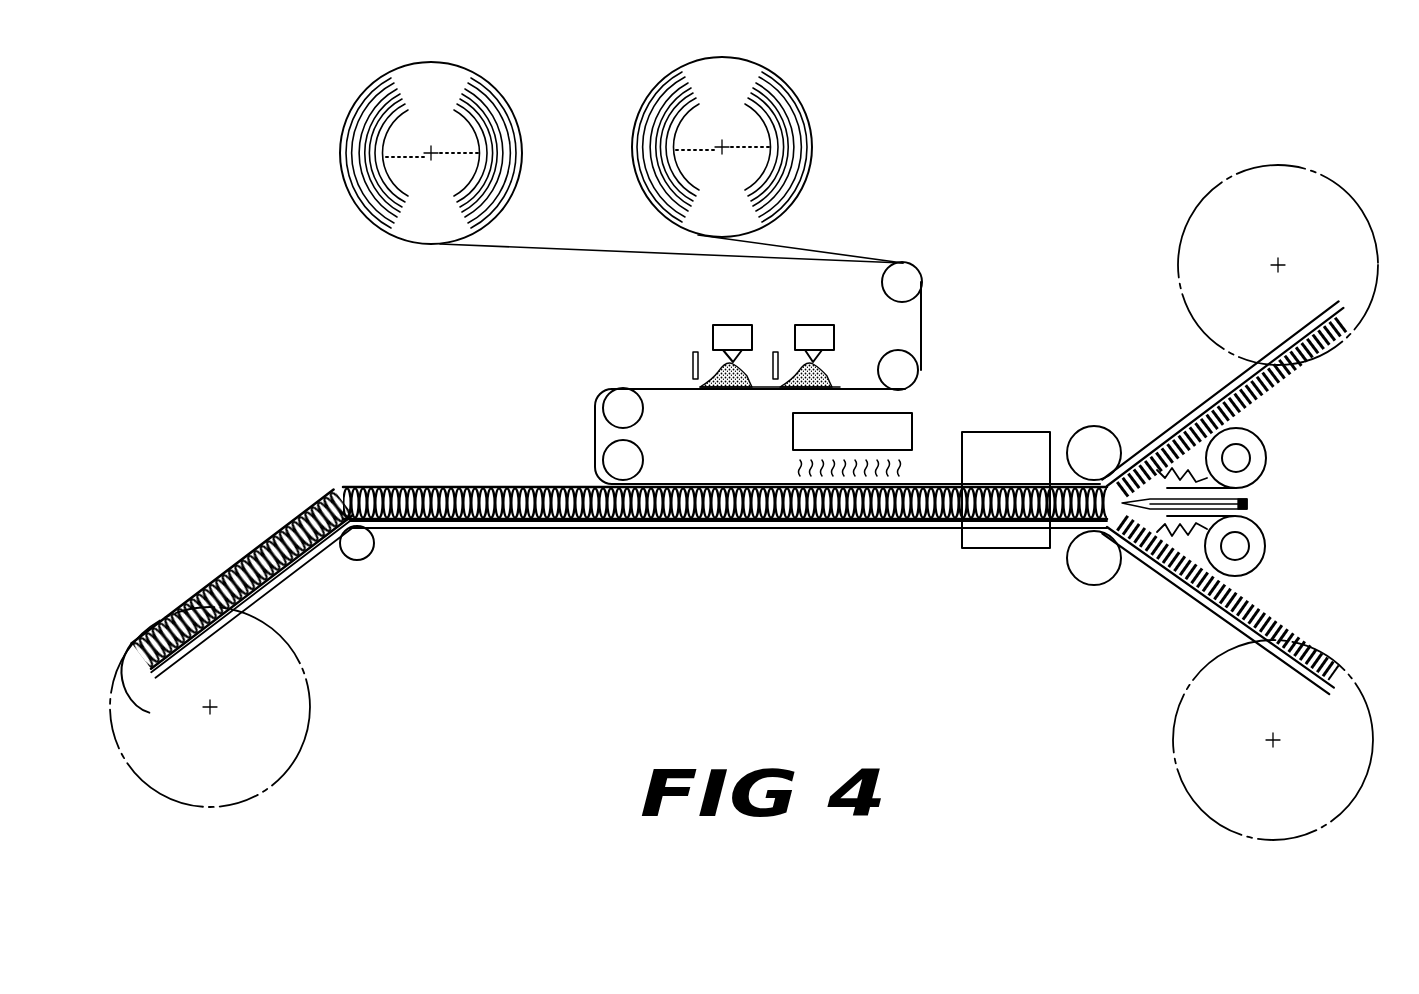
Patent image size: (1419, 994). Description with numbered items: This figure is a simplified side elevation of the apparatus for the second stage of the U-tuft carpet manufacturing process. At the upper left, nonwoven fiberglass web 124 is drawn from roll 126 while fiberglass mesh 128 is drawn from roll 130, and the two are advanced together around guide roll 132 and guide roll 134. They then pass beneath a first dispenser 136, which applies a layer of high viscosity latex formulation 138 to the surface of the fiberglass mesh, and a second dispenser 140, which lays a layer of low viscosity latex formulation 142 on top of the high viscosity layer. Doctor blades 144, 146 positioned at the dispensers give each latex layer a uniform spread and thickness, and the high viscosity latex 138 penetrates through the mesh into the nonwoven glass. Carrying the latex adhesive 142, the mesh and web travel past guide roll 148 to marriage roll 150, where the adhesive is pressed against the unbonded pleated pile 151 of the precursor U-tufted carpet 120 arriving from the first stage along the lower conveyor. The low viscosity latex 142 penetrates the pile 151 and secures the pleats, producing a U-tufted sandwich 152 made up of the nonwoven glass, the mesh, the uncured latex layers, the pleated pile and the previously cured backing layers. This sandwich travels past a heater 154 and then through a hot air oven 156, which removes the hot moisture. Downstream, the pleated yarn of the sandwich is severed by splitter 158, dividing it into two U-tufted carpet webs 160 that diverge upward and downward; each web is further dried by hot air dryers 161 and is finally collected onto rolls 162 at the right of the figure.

The precursor U-tufted carpet 120 is at (268, 578).
The nonwoven fiberglass web 124 is at (822, 248).
The roll 126 is at (810, 142).
The fiberglass mesh 128 is at (540, 247).
The roll 130 is at (515, 140).
The guide roll 132 is at (912, 277).
The guide roll 134 is at (912, 373).
The first dispenser 136 is at (822, 327).
The high viscosity latex formulation 138 is at (762, 387).
The second dispenser 140 is at (733, 325).
The low viscosity latex formulation 142 is at (668, 388).
The doctor blade 144 is at (778, 352).
The doctor blade 146 is at (695, 360).
The guide roll 148 is at (645, 420).
The marriage roll 150 is at (645, 480).
The unbonded pleated pile 151 is at (478, 487).
The U-tufted sandwich 152 is at (742, 472).
The heater 154 is at (910, 428).
The hot air oven 156 is at (1012, 440).
The splitter 158 is at (1248, 506).
The U-tufted carpet webs 160 is at (1200, 412).
The hot air dryers 161 is at (1268, 445).
The rolls 162 is at (1233, 188).